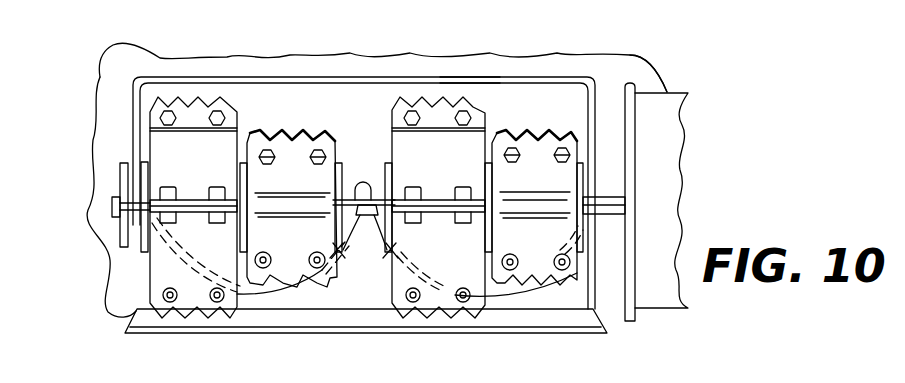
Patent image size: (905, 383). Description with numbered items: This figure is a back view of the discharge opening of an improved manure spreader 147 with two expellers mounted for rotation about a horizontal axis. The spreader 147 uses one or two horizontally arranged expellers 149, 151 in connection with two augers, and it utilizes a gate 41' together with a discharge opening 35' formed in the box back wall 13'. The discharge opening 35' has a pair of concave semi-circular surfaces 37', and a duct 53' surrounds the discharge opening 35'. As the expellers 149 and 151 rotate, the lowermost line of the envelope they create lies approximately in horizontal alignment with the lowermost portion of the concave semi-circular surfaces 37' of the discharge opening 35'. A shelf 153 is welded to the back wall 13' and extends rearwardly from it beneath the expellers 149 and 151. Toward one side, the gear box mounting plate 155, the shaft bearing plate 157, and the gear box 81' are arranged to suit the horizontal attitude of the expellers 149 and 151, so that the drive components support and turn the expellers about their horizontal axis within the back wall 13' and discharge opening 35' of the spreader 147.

The back wall 13' is at (377, 169).
The manure spreader 147 is at (668, 59).
The gear box 81' is at (684, 200).
The gear box mounting plate 155 is at (633, 323).
The gate 41' is at (364, 157).
The discharge opening 35' is at (364, 169).
The duct 53' is at (461, 53).
The shaft bearing plate 157 is at (120, 169).
The expeller 151 is at (394, 312).
The shelf 153 is at (508, 320).
The expeller 149 is at (149, 287).
The concave semi-circular surfaces 37' is at (320, 259).